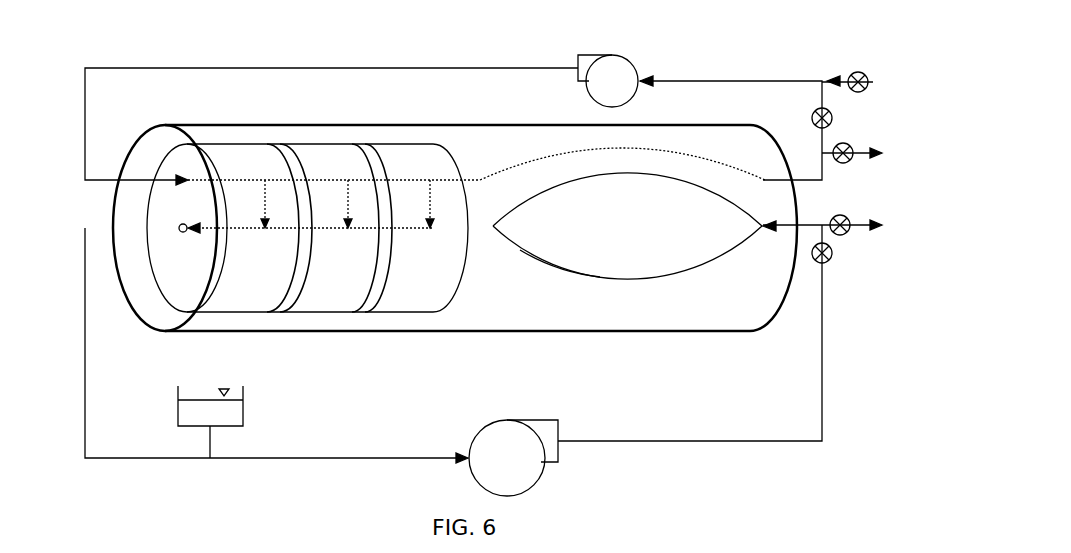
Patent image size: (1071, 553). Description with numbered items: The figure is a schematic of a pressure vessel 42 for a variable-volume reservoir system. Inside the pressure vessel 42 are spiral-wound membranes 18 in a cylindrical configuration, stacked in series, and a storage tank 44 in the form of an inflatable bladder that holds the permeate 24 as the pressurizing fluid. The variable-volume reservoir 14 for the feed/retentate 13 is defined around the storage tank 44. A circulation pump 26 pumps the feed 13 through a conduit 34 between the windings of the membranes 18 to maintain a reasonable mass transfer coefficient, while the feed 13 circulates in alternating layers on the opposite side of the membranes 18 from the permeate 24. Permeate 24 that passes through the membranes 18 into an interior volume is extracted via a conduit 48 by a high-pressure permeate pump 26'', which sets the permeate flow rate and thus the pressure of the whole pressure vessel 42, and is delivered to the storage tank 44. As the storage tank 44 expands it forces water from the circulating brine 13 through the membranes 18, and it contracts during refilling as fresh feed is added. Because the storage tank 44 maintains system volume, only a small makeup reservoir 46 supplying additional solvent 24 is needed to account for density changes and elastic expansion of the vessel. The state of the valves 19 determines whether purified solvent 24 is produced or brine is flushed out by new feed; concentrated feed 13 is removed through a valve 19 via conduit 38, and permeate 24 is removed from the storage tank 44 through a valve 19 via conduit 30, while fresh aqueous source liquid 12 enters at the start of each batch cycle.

The fresh aqueous source liquid 12 is at (870, 82).
The feed/retentate 13 is at (412, 180).
The variable-volume reservoir 14 is at (520, 134).
The membranes 18 is at (330, 143).
The valves 19 is at (830, 258).
The permeate 24 is at (412, 228).
The circulation pump 26 is at (608, 81).
The high-pressure permeate pump 26'' is at (513, 458).
The conduit 30 is at (850, 222).
The conduit 34 is at (393, 68).
The conduit 38 is at (848, 146).
The pressure vessel 42 is at (438, 125).
The storage tank 44 is at (548, 263).
The makeup reservoir 46 is at (247, 398).
The conduit 48 is at (592, 441).